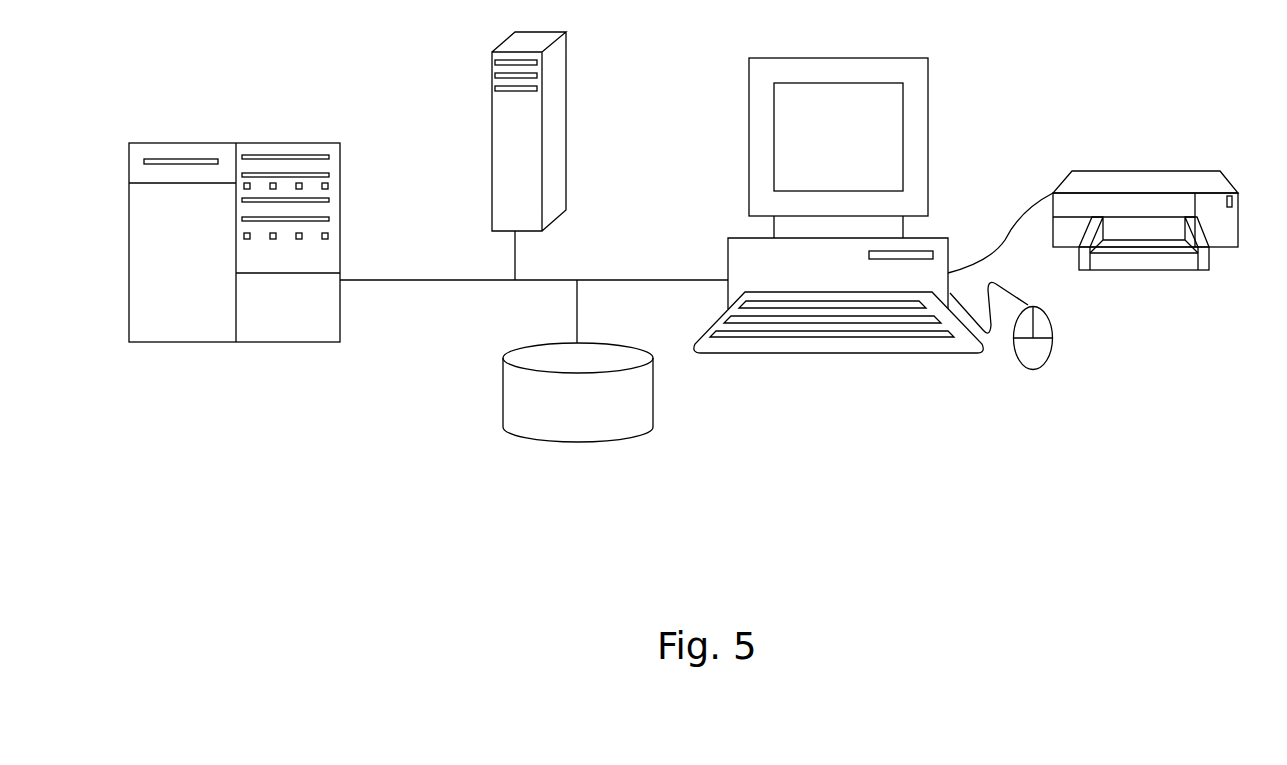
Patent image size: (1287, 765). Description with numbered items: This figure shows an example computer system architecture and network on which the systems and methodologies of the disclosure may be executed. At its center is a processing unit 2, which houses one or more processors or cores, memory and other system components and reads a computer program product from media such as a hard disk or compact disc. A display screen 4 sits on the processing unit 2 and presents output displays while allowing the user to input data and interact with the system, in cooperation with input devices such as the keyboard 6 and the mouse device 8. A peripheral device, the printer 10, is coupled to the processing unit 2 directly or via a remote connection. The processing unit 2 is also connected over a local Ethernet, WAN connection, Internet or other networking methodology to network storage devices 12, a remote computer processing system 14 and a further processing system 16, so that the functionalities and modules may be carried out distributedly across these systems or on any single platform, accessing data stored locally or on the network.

The processing unit 2 is at (732, 262).
The display screen 4 is at (929, 133).
The keyboard 6 is at (897, 353).
The mouse device 8 is at (1053, 352).
The printer 10 is at (1145, 170).
The network storage devices 12 is at (593, 442).
The remote computer processing system 14 is at (567, 120).
The processing system 16 is at (277, 142).